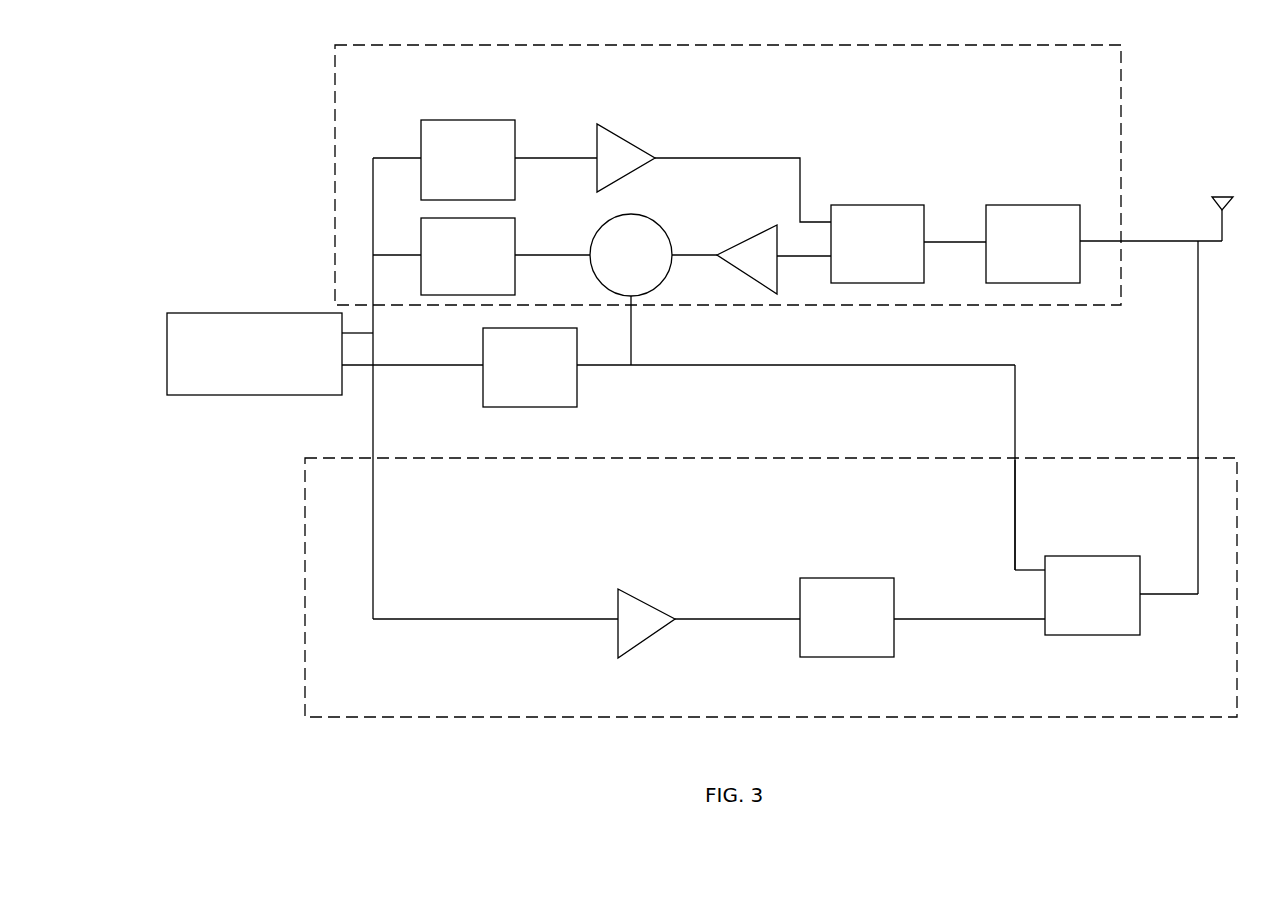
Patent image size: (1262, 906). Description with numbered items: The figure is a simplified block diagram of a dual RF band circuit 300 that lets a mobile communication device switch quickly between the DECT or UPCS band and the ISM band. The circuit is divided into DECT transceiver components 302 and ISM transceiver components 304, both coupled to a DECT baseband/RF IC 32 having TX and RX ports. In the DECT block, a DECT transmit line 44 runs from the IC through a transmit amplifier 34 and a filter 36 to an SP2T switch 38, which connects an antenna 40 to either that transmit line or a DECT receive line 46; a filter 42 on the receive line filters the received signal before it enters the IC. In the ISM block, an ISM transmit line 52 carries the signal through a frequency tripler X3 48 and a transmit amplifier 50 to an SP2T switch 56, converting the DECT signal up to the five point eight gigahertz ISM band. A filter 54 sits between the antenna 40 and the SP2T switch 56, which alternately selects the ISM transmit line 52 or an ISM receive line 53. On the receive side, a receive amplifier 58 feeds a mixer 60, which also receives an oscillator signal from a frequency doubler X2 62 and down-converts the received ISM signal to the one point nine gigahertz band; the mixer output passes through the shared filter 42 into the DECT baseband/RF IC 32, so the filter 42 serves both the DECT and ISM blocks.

The dual RF band circuit 300 is at (721, 31).
The ISM transceiver components 304 is at (333, 130).
The DECT transceiver components 302 is at (303, 566).
The DECT baseband/RF integrated circuit 32 is at (254, 354).
The frequency tripler X3 48 is at (468, 160).
The frequency doubler X2 62 is at (468, 256).
The transmit amplifier 50 is at (641, 145).
The ISM transmit line 52 is at (753, 152).
The mixer 60 is at (631, 255).
The receive amplifier 58 is at (738, 250).
The ISM receive line 53 is at (787, 257).
The SP2T switch 56 is at (877, 244).
The filter 54 is at (1033, 244).
The antenna 40 is at (1193, 206).
The filter 42 is at (530, 367).
The DECT transmit line 44 is at (473, 619).
The transmit amplifier 34 is at (639, 603).
The filter 36 is at (847, 617).
The DECT receive line 46 is at (1008, 550).
The SP2T switch 38 is at (1092, 595).